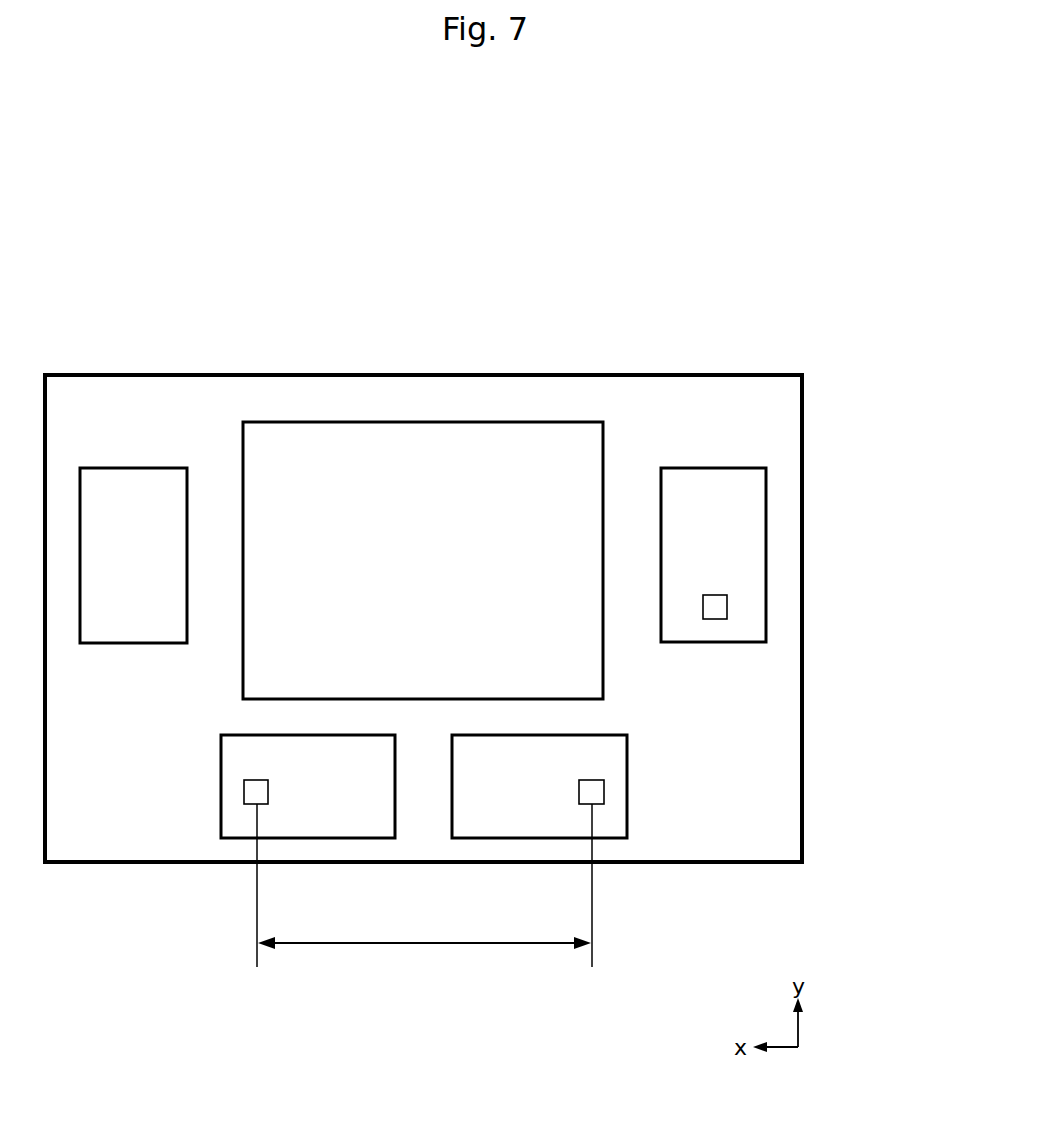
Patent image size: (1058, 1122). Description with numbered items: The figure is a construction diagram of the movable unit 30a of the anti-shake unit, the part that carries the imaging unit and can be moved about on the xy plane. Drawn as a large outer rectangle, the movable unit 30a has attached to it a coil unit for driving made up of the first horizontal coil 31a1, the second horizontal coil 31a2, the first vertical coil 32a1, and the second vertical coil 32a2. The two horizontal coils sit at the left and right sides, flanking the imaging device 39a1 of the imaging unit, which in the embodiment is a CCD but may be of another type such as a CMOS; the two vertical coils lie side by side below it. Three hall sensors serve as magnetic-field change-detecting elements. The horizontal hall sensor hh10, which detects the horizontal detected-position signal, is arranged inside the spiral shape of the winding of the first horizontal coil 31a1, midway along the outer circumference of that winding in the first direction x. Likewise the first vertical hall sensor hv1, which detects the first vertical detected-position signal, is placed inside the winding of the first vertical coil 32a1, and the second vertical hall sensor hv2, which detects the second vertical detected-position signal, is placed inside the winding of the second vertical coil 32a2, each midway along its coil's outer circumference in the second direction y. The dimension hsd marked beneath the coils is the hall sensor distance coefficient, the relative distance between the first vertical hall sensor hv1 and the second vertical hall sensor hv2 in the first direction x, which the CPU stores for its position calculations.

The movable unit 30a is at (802, 375).
The second horizontal coil 31a2 is at (127, 468).
The first horizontal coil 31a1 is at (766, 468).
The imaging device 39a1 is at (672, 433).
The horizontal hall sensor hh10 is at (719, 594).
The second vertical coil 32a2 is at (221, 735).
The first vertical coil 32a1 is at (627, 735).
The second vertical hall sensor hv2 is at (245, 782).
The first vertical hall sensor hv1 is at (604, 793).
The hall sensor distance coefficient hsd is at (424, 885).